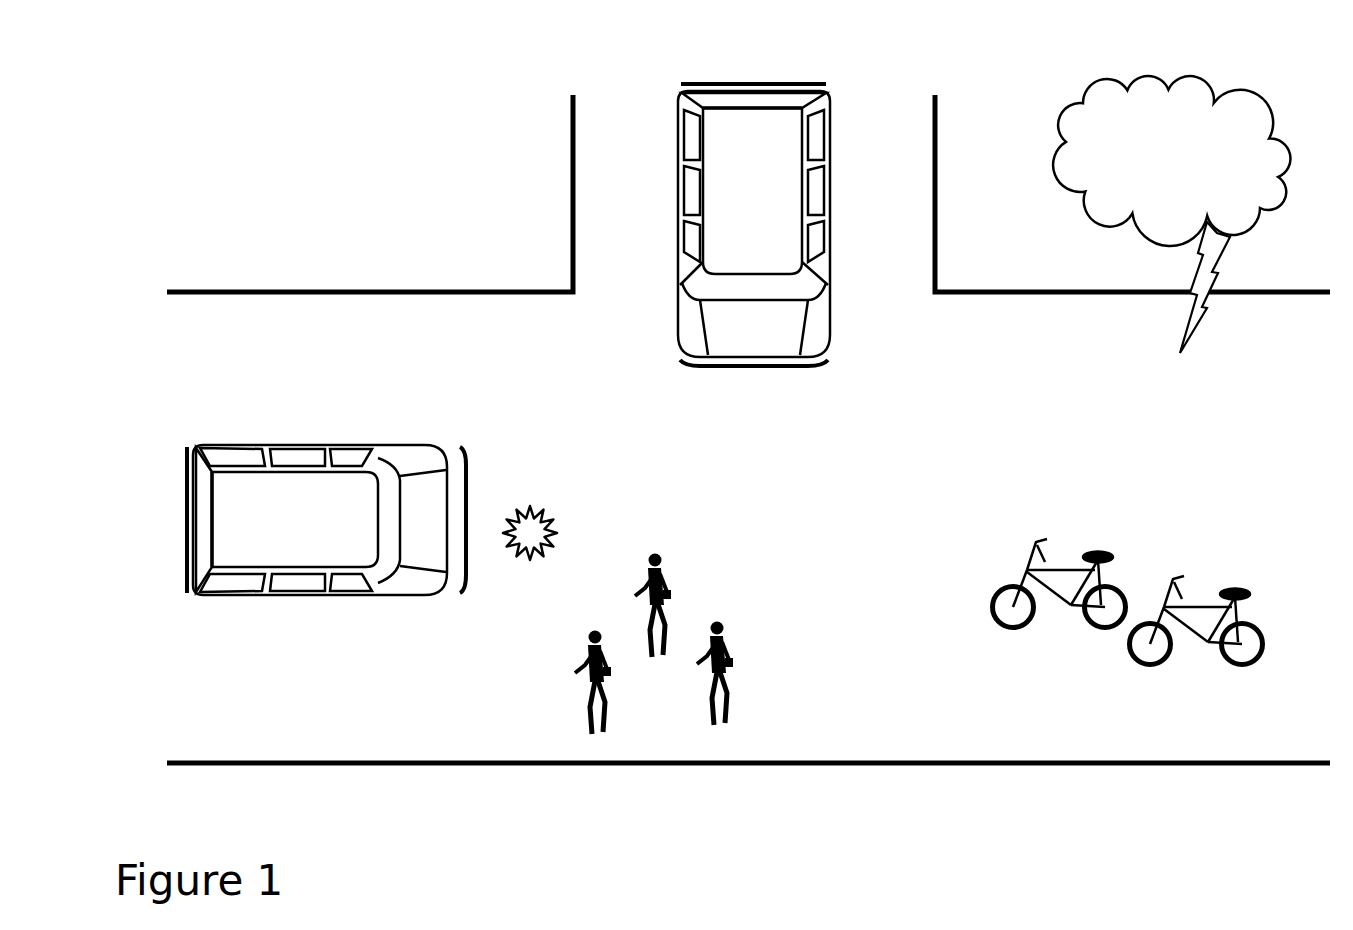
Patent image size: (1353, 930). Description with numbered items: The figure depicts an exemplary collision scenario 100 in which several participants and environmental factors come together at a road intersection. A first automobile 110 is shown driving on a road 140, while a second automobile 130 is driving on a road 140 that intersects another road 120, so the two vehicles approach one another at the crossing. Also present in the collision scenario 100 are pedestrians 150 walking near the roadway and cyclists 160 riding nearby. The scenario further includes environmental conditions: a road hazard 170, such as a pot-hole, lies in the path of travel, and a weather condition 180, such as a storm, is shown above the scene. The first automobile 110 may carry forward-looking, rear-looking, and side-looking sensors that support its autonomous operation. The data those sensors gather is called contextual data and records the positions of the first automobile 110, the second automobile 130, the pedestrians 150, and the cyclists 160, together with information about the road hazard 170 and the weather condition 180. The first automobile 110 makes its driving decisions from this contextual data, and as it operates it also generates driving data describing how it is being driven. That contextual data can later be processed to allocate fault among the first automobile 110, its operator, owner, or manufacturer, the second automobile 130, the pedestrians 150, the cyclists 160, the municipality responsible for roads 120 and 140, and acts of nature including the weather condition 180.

The collision scenario 100 is at (305, 133).
The first automobile 110 is at (358, 593).
The road 120 is at (465, 778).
The second automobile 130 is at (830, 292).
The road 140 is at (563, 228).
The pedestrians 150 is at (660, 716).
The cyclists 160 is at (1095, 670).
The road hazard 170 is at (547, 505).
The weather condition 180 is at (1062, 113).